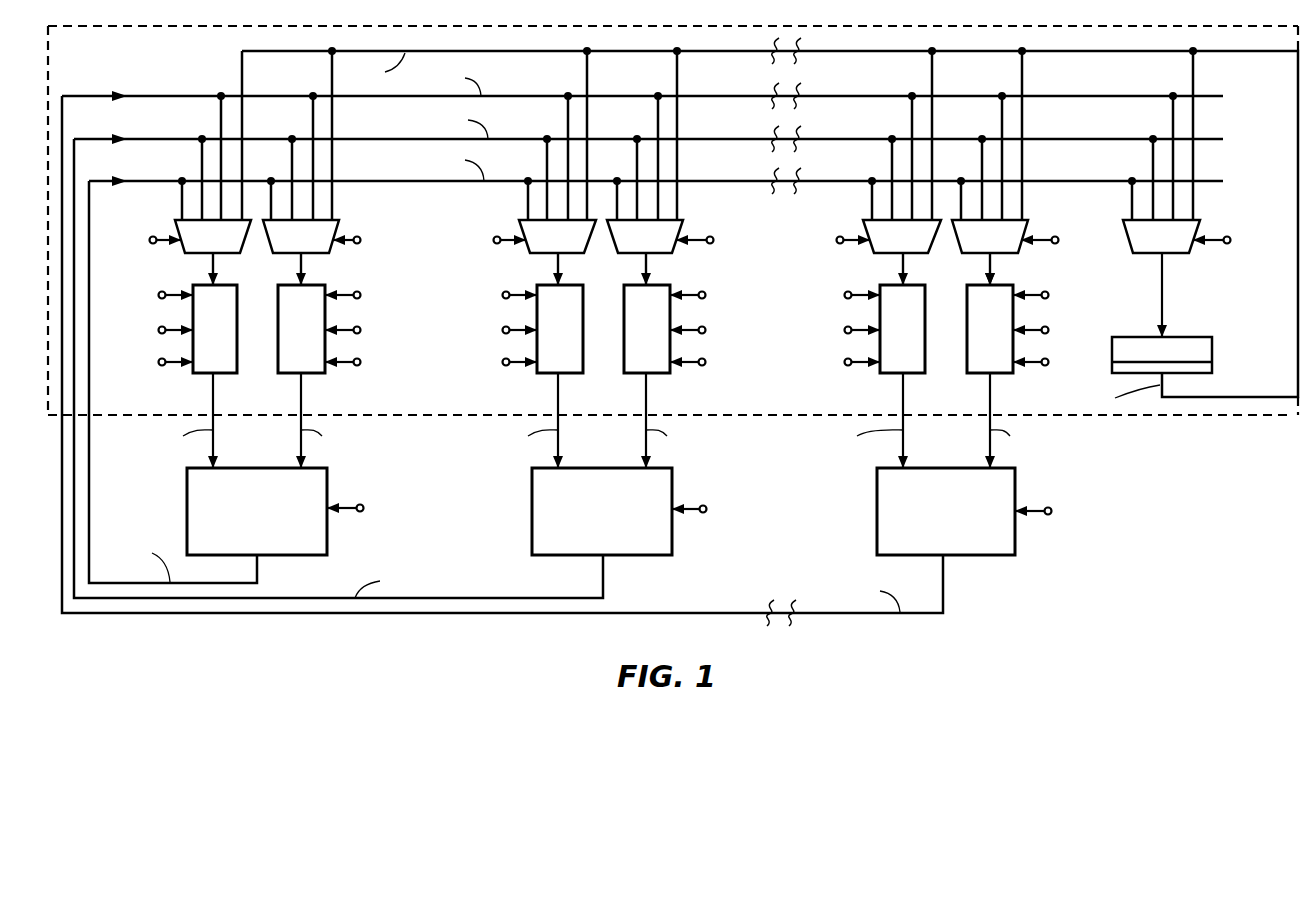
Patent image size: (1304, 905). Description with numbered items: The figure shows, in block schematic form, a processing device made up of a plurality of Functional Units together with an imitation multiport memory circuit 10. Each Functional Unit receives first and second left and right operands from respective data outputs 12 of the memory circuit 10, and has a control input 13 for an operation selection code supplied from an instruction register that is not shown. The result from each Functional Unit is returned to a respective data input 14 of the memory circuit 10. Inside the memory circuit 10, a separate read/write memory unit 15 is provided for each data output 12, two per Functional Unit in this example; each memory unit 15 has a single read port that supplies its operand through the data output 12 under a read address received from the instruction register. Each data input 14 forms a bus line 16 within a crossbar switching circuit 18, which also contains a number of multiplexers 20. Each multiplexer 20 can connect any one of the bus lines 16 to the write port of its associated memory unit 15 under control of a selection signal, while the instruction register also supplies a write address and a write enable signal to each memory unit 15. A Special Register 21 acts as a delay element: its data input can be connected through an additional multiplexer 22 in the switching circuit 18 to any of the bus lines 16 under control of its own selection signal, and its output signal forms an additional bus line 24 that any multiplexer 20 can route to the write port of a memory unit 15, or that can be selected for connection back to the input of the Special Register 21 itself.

The imitation multiport memory circuit 10 is at (1290, 418).
The data output 12 is at (301, 398).
The control input 13 is at (345, 503).
The data input 14 is at (60, 443).
The read/write memory unit 15 is at (237, 318).
The bus line 16 is at (1135, 96).
The crossbar switching circuit 18 is at (153, 77).
The multiplexer 20 is at (244, 243).
The Special Register 21 is at (1212, 355).
The additional multiplexer 22 is at (1203, 222).
The additional bus line 24 is at (1085, 57).